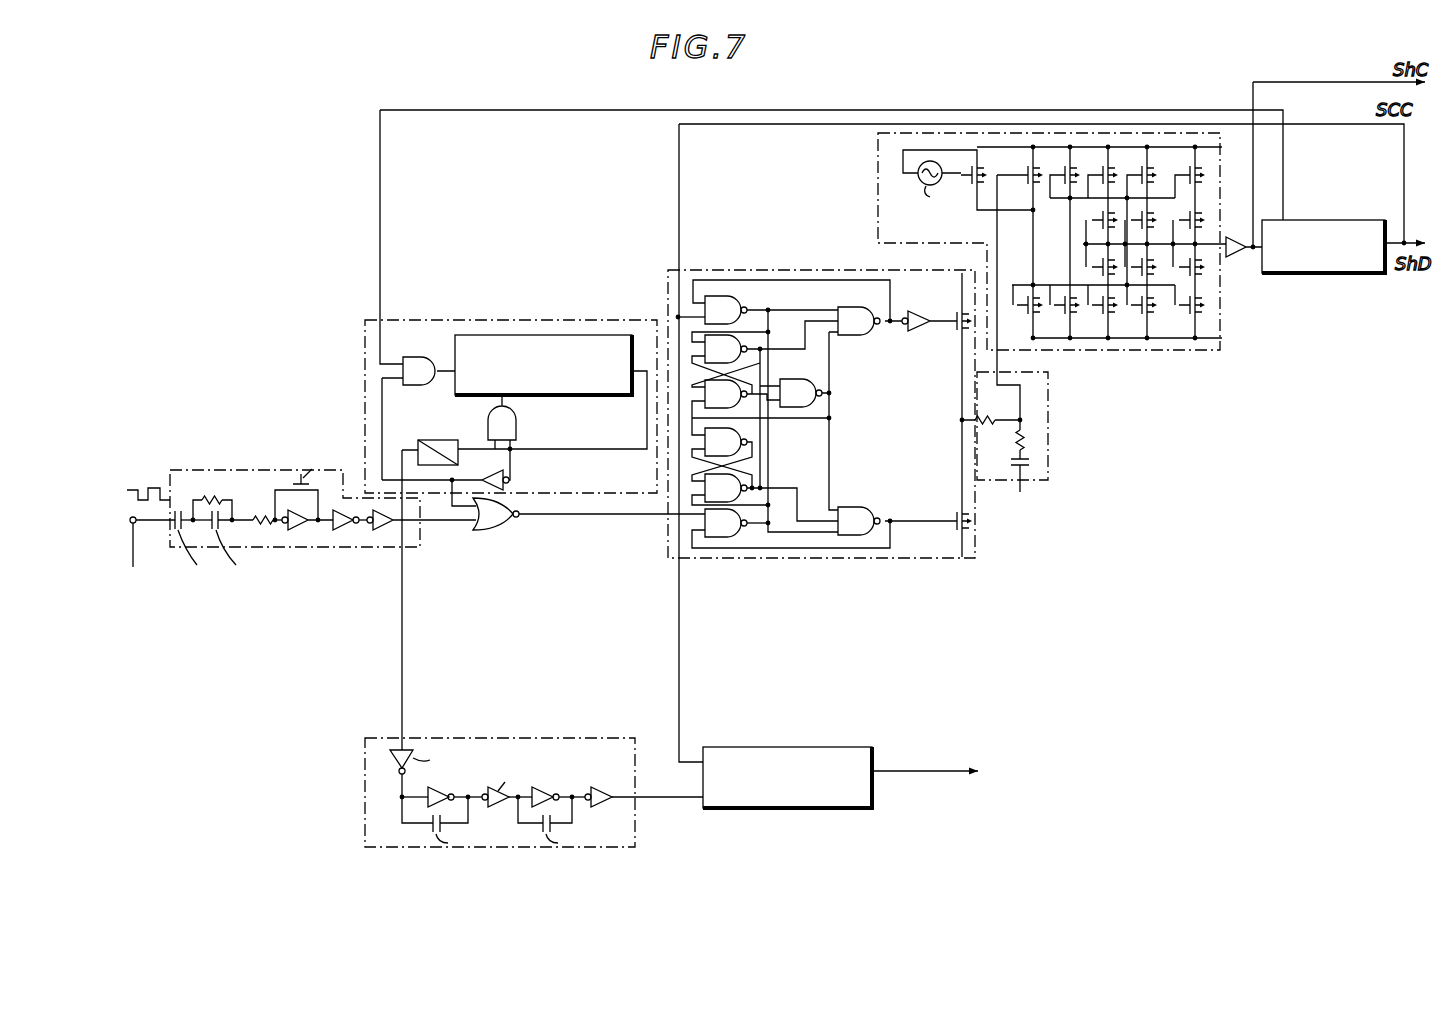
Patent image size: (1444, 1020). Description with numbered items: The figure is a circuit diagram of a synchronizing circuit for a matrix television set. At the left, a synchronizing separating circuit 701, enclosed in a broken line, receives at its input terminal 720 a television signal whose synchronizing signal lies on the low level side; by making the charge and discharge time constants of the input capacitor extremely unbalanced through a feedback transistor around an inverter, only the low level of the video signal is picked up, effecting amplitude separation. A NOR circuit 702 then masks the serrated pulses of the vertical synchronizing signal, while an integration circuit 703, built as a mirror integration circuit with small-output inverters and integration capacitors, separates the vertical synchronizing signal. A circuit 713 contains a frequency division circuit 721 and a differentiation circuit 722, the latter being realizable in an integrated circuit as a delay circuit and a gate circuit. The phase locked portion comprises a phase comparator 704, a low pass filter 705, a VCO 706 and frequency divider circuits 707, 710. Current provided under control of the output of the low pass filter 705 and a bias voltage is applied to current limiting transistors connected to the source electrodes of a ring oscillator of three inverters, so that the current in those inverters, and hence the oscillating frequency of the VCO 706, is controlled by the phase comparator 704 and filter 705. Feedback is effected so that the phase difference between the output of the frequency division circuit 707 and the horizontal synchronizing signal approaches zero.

The synchronizing separating circuit 701 is at (297, 548).
The NOR circuit 702 is at (500, 532).
The integration circuit 703 is at (620, 728).
The phase comparator 704 is at (722, 560).
The low pass filter 705 is at (1048, 384).
The VCO 706 is at (1150, 352).
The frequency divider circuit 707 is at (1262, 276).
The frequency divider circuit 710 is at (742, 810).
The circuit 713 is at (411, 396).
The input terminal 720 is at (151, 542).
The frequency division circuit 721 is at (556, 396).
The differentiation circuit 722 is at (420, 443).